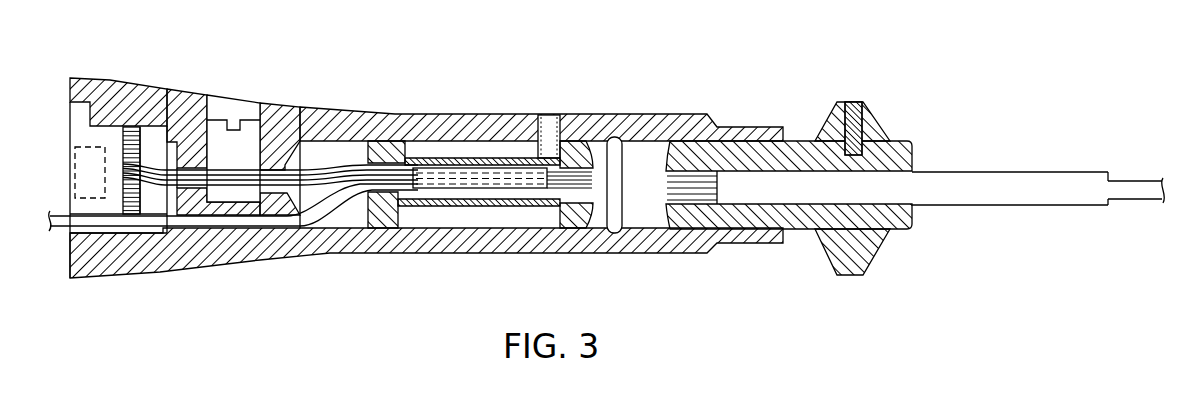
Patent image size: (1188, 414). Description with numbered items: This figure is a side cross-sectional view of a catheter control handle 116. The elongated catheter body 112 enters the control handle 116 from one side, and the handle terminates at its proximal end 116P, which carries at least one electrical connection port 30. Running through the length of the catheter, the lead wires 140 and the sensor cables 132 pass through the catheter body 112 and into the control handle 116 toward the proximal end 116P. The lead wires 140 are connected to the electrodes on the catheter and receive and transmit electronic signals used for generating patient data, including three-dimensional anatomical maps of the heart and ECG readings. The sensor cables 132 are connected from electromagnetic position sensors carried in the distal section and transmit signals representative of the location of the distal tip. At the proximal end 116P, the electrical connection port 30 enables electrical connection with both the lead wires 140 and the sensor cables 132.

The proximal end of the control handle 116P is at (83, 78).
The electrical connection port 30 is at (77, 177).
The lead wires 140 is at (319, 168).
The sensor cables 132 is at (350, 168).
The control handle 116 is at (650, 114).
The catheter body 112 is at (1128, 205).